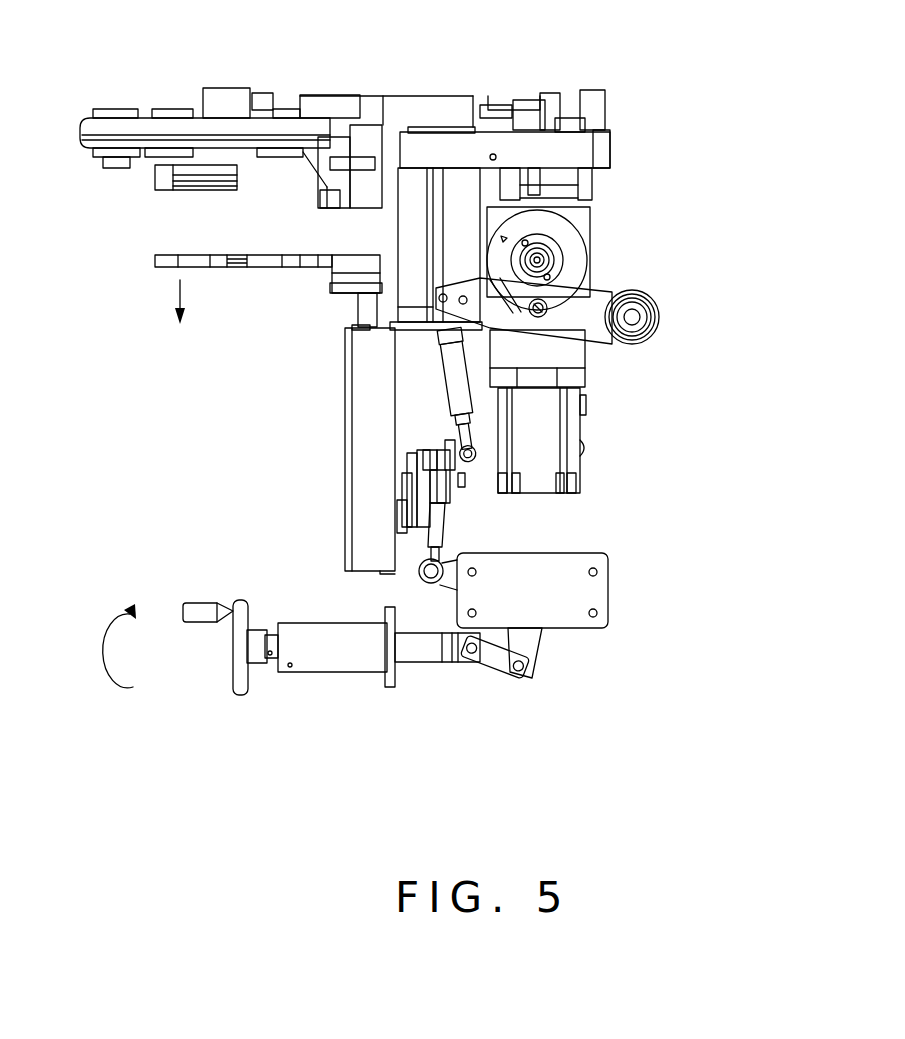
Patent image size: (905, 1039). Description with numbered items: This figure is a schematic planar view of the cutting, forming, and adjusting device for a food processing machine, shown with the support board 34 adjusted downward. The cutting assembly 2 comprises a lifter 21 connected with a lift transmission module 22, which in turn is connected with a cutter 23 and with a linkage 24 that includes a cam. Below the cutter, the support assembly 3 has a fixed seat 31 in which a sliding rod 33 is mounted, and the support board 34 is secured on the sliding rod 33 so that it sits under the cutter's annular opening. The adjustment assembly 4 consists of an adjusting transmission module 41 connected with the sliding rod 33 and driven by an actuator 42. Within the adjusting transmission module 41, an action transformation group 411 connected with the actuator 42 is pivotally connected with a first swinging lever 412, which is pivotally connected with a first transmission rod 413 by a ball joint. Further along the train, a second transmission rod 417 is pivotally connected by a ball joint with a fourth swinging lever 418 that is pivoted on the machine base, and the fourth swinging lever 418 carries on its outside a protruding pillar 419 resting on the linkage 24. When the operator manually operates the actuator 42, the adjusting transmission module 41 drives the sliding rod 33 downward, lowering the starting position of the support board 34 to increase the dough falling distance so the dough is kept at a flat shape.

The cutting assembly 2 is at (686, 472).
The lifter 21 is at (547, 440).
The lift transmission module 22 is at (563, 183).
The cutter 23 is at (95, 120).
The linkage 24 is at (567, 227).
The support assembly 3 is at (218, 371).
The fixed seat 31 is at (360, 385).
The sliding rod 33 is at (358, 310).
The support board 34 is at (170, 260).
The adjustment assembly 4 is at (192, 785).
The adjusting transmission module 41 is at (303, 773).
The actuator 42 is at (203, 612).
The action transformation group 411 is at (330, 658).
The first swinging lever 412 is at (530, 647).
The first transmission rod 413 is at (425, 585).
The second transmission rod 417 is at (450, 380).
The fourth swinging lever 418 is at (593, 310).
The protruding pillar 419 is at (548, 315).